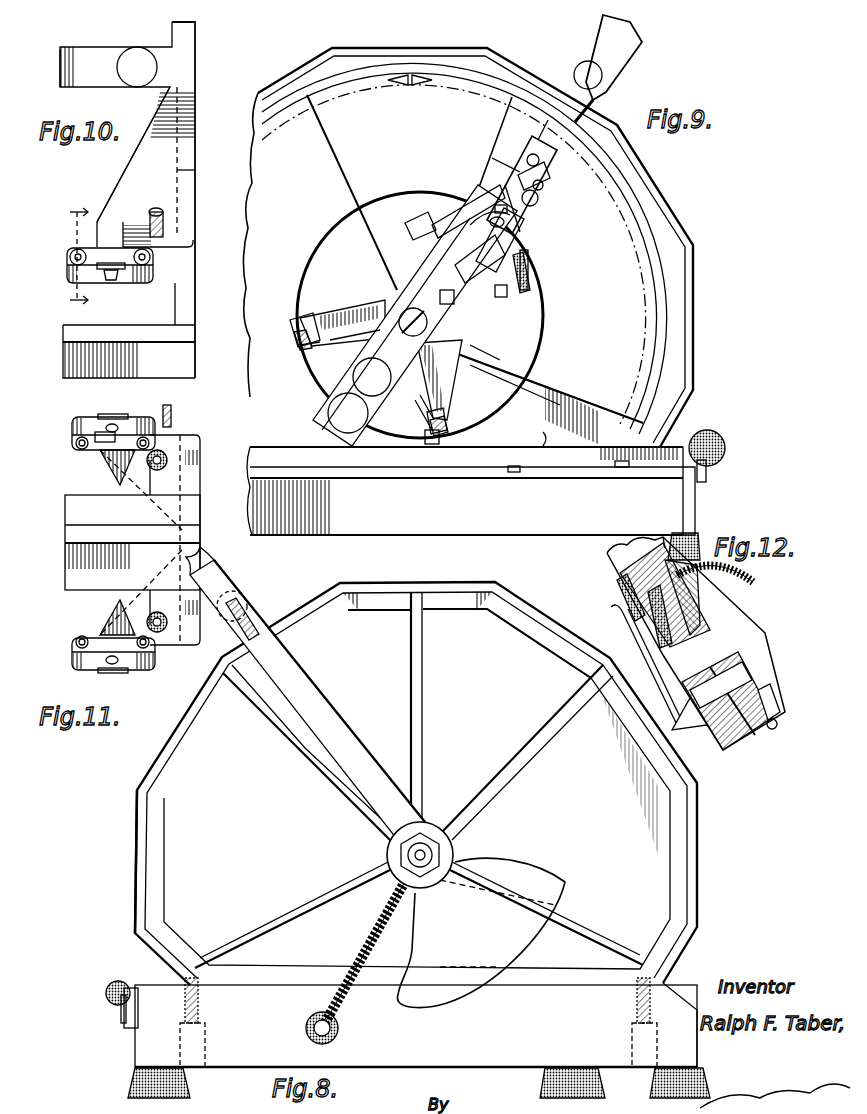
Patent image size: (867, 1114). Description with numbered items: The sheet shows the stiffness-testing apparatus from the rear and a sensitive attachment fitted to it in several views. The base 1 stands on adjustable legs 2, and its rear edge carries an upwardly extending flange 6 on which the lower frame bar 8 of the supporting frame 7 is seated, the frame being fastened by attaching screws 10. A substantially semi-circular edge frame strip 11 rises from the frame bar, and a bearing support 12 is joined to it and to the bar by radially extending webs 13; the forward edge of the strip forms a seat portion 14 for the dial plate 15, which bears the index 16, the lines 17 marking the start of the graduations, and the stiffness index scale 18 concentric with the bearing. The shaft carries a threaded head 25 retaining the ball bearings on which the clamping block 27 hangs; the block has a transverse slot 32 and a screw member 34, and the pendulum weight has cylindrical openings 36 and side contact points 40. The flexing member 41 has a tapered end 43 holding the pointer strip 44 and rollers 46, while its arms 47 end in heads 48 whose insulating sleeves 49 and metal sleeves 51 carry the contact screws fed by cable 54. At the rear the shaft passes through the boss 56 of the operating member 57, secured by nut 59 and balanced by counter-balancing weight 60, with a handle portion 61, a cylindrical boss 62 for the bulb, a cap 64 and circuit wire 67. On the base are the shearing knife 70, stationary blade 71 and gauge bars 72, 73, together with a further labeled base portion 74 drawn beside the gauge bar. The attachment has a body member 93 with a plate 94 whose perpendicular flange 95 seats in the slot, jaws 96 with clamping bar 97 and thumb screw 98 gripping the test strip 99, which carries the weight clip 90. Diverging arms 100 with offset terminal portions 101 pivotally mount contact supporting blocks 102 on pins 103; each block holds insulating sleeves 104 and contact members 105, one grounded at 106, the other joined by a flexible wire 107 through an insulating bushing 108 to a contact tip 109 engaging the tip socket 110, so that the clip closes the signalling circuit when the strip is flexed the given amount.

In FIG. 9, the base 1 is at (433, 530).
In FIG. 8, the base 1 is at (492, 1058).
In FIG. 12, the legs 2 is at (700, 545).
In FIG. 8, the legs 2 is at (190, 1082).
In FIG. 9, the upwardly extending flange 6 is at (272, 455).
In FIG. 8, the upwardly extending flange 6 is at (670, 995).
In FIG. 9, the supporting frame 7 is at (693, 310).
In FIG. 8, the supporting frame 7 is at (148, 758).
In FIG. 8, the lower frame bar 8 is at (278, 980).
In FIG. 8, the attaching screws 10 is at (200, 1012).
In FIG. 8, the edge frame strip 11 is at (142, 810).
In FIG. 10, the bearing support 12 is at (66, 255).
In FIG. 8, the bearing support 12 is at (420, 831).
In FIG. 8, the radially extending webs 13 is at (300, 748).
In FIG. 9, the face or seat portion 14 is at (684, 268).
In FIG. 9, the dial plate 15 is at (658, 225).
In FIG. 8, the dial plate 15 is at (180, 848).
In FIG. 9, the index position 16 is at (405, 90).
In FIG. 9, the lines 17 is at (345, 170).
In FIG. 9, the stiffness index scale 18 is at (645, 200).
In FIG. 9, the threaded head 25 is at (408, 335).
In FIG. 9, the clamping block 27 is at (428, 265).
In FIG. 9, the transverse slot 32 is at (455, 346).
In FIG. 9, the screw member 34 is at (455, 310).
In FIG. 9, the cylindrical openings 36 is at (352, 375).
In FIG. 9, the contact point 40 is at (380, 408).
In FIG. 9, the flexing member 41 is at (478, 348).
In FIG. 9, the tapered end 43 is at (538, 170).
In FIG. 9, the indicator or pointer strip 44 is at (545, 138).
In FIG. 9, the cylindrical rollers 46 is at (527, 160).
In FIG. 9, the arms 47 is at (352, 305).
In FIG. 9, the laterally extending heads 48 is at (432, 444).
In FIG. 9, the insulating sleeve 49 is at (332, 338).
In FIG. 9, the metal sleeve 51 is at (300, 352).
In FIG. 8, the electric circuit cable 54 is at (340, 1002).
In FIG. 8, the boss 56 is at (445, 845).
In FIG. 9, the operating member 57 is at (602, 100).
In FIG. 8, the operating member 57 is at (322, 705).
In FIG. 8, the nut 59 is at (450, 856).
In FIG. 8, the counter-balancing weight 60 is at (525, 890).
In FIG. 9, the handle portion 61 is at (628, 40).
In FIG. 8, the handle portion 61 is at (236, 578).
In FIG. 8, the cylindrical boss 62 is at (246, 604).
In FIG. 9, the cap 64 is at (582, 68).
In FIG. 8, the circuit wire 67 is at (253, 637).
In FIG. 9, the shearing knife 70 is at (712, 463).
In FIG. 8, the shearing knife 70 is at (126, 1028).
In FIG. 9, the stationary blade 71 is at (706, 480).
In FIG. 8, the stationary blade 71 is at (128, 965).
In FIG. 9, the gauge bar 72 is at (514, 473).
In FIG. 9, the gauge bar 73 is at (622, 468).
In FIG. 9, the ledge 74 is at (597, 441).
In FIG. 9, the weight member 90 is at (480, 268).
In FIG. 10, the body member 93 is at (196, 28).
In FIG. 11, the body member 93 is at (190, 478).
In FIG. 9, the body member 93 is at (470, 210).
In FIG. 12, the body member 93 is at (665, 595).
In FIG. 10, the plate 94 is at (70, 335).
In FIG. 11, the plate 94 is at (75, 508).
In FIG. 9, the plate 94 is at (470, 285).
In FIG. 10, the perpendicular flange 95 is at (70, 358).
In FIG. 11, the perpendicular flange 95 is at (75, 538).
In FIG. 9, the perpendicular flange 95 is at (400, 290).
In FIG. 10, the jaws 96 is at (65, 65).
In FIG. 9, the jaws 96 is at (490, 160).
In FIG. 12, the jaws 96 is at (644, 611).
In FIG. 9, the clamping bar 97 is at (543, 185).
In FIG. 10, the thumb screw 98 is at (135, 55).
In FIG. 9, the thumb screw 98 is at (538, 199).
In FIG. 9, the test strip 99 is at (495, 228).
In FIG. 10, the arms 100 is at (182, 168).
In FIG. 11, the arms 100 is at (135, 478).
In FIG. 9, the arms 100 is at (505, 190).
In FIG. 12, the arms 100 is at (630, 556).
In FIG. 10, the terminal portions 101 is at (110, 270).
In FIG. 11, the terminal portions 101 is at (115, 416).
In FIG. 9, the terminal portions 101 is at (425, 200).
In FIG. 12, the terminal portions 101 is at (760, 655).
In FIG. 10, the contact supporting block members 102 is at (147, 285).
In FIG. 11, the contact supporting block members 102 is at (78, 425).
In FIG. 9, the contact supporting block members 102 is at (400, 222).
In FIG. 12, the contact supporting block members 102 is at (772, 718).
In FIG. 10, the pins 103 is at (113, 282).
In FIG. 11, the pins 103 is at (116, 426).
In FIG. 12, the pins 103 is at (770, 730).
In FIG. 10, the insulating sleeve 104 is at (70, 259).
In FIG. 11, the insulating sleeve 104 is at (76, 443).
In FIG. 9, the insulating sleeve 104 is at (503, 298).
In FIG. 12, the insulating sleeve 104 is at (705, 733).
In FIG. 11, the contact member 105 is at (78, 447).
In FIG. 9, the contact member 105 is at (418, 238).
In FIG. 12, the contact member 105 is at (750, 682).
In FIG. 11, the ground 106 is at (100, 435).
In FIG. 10, the flexible wire 107 is at (165, 228).
In FIG. 11, the flexible wire 107 is at (172, 418).
In FIG. 9, the flexible wire 107 is at (325, 282).
In FIG. 12, the flexible wire 107 is at (620, 629).
In FIG. 10, the insulating bushing 108 is at (163, 210).
In FIG. 11, the insulating bushing 108 is at (168, 460).
In FIG. 9, the insulating bushing 108 is at (433, 210).
In FIG. 12, the insulating bushing 108 is at (695, 590).
In FIG. 9, the contact tip 109 is at (297, 345).
In FIG. 9, the tip socket 110 is at (305, 322).